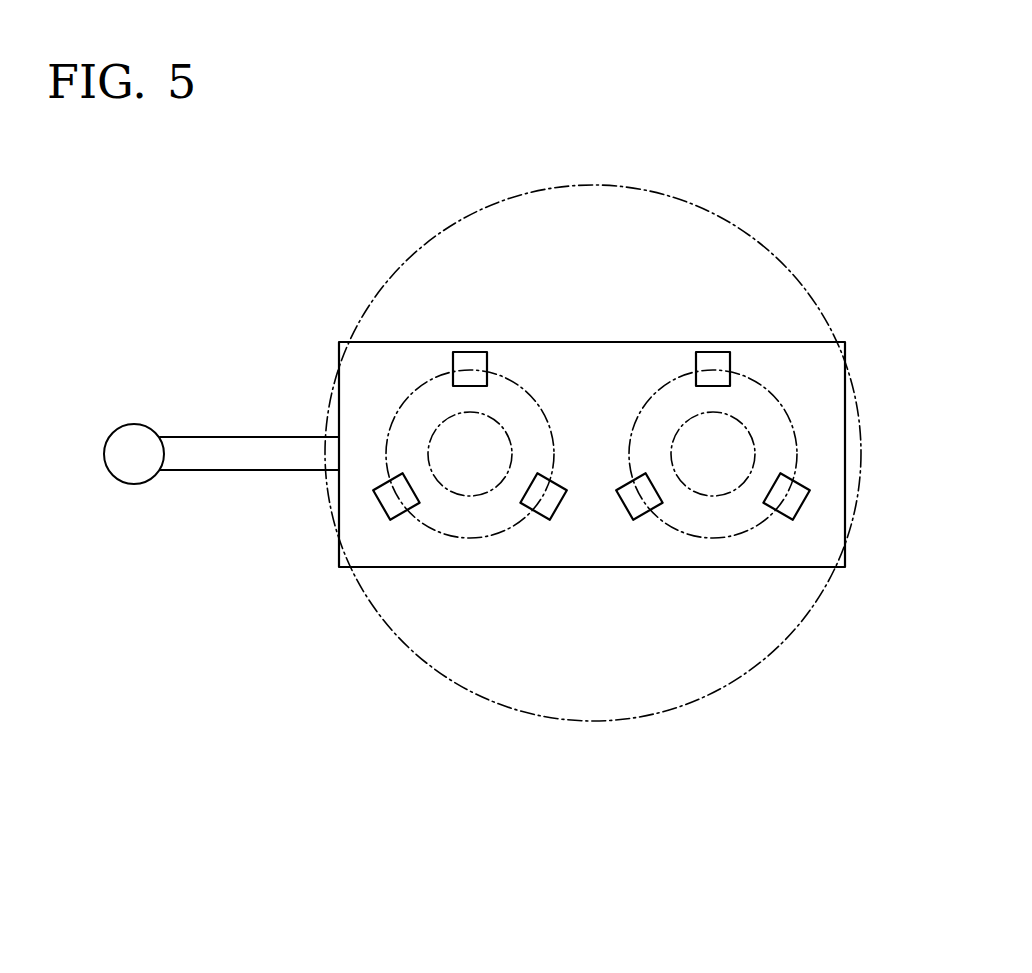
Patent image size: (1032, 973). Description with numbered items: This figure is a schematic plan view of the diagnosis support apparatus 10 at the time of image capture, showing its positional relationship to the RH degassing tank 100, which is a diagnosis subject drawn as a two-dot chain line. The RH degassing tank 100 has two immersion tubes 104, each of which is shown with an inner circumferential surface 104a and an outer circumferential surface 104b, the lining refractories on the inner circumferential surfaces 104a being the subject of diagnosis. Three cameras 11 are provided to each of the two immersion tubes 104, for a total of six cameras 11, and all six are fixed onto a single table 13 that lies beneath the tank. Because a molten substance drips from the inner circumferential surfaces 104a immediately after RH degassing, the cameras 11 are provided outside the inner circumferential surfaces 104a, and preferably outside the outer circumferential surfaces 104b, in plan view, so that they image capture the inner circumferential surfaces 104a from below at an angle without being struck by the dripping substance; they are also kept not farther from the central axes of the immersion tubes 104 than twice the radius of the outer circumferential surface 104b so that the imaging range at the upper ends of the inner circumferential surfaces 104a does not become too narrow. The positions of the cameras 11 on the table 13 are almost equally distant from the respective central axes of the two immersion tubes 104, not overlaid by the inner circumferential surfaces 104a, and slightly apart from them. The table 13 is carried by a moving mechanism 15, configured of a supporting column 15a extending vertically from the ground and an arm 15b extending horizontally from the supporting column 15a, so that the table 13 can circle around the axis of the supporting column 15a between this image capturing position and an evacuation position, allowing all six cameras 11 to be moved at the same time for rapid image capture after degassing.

The diagnosis support apparatus 10 is at (613, 454).
The cameras 11 is at (527, 483).
The table 13 is at (732, 567).
The moving mechanism 15 is at (198, 401).
The supporting column 15a is at (134, 424).
The arm 15b is at (258, 437).
The RH degassing tank 100 is at (722, 213).
The immersion tubes 104 is at (585, 454).
The inner circumferential surfaces 104a is at (688, 420).
The outer circumferential surfaces 104b is at (653, 393).